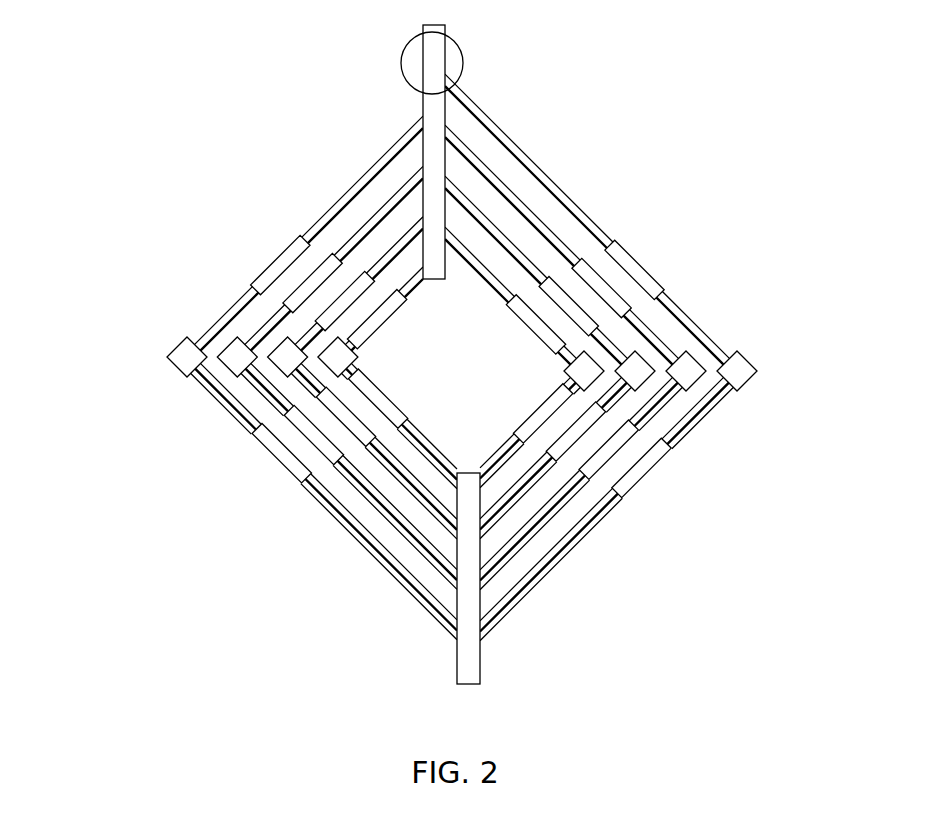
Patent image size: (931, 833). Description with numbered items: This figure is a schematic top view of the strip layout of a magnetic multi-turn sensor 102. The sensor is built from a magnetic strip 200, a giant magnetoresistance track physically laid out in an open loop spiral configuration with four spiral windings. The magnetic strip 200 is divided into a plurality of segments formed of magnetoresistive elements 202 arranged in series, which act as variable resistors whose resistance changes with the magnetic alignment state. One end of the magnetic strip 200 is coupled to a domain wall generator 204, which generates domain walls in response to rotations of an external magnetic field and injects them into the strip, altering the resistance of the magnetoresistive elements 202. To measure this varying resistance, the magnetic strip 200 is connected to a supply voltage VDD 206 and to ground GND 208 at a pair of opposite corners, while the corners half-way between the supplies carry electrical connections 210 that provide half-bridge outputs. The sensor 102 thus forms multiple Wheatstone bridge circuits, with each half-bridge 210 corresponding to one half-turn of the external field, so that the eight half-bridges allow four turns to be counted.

The magnetic multi-turn sensor 102 is at (135, 195).
The magnetic strip 200 is at (370, 163).
The magnetoresistive element 202 is at (590, 228).
The domain wall generator 204 is at (401, 58).
The supply voltage VDD 206 is at (437, 72).
The ground GND 208 is at (468, 643).
The electrical connections 210 is at (737, 371).